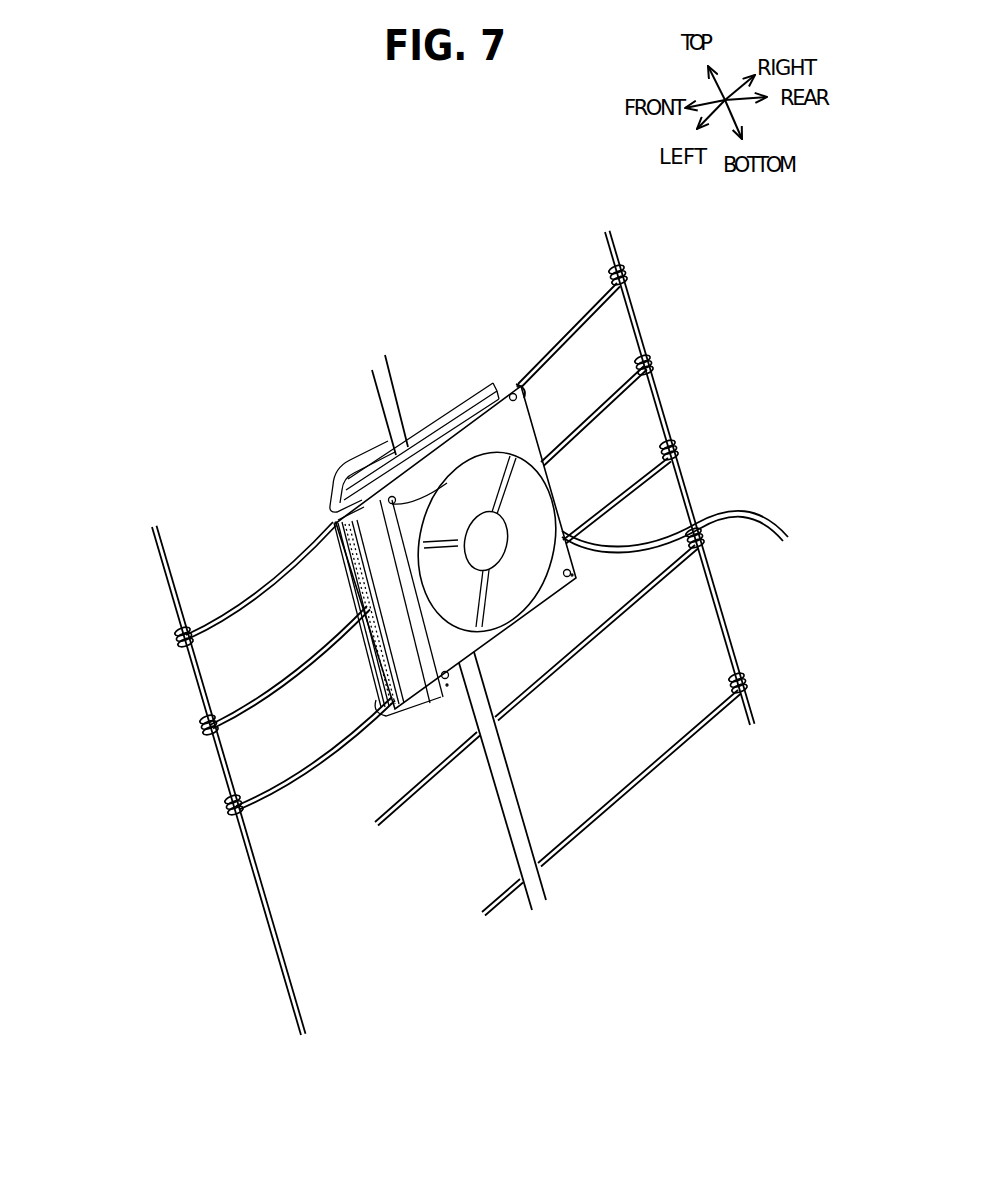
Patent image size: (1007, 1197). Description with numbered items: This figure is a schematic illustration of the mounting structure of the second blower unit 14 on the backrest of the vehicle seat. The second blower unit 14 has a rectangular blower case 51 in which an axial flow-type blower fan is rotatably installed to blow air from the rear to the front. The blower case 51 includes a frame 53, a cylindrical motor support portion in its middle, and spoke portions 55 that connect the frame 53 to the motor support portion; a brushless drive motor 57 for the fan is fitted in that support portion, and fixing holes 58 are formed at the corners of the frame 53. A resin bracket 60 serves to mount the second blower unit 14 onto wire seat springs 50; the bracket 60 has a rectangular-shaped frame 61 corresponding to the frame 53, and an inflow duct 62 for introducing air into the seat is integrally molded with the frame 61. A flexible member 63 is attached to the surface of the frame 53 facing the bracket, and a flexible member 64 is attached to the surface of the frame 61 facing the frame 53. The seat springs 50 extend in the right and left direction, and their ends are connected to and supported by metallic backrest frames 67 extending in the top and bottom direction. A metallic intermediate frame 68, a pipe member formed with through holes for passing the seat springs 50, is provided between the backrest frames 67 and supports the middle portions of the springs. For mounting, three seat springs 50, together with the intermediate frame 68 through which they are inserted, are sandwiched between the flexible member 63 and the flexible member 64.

The second blower unit 14 is at (487, 590).
The wire seat springs 50 is at (584, 310).
The blower case 51 is at (512, 428).
The frame 53 is at (598, 643).
The spoke portions 55 is at (501, 641).
The drive motor 57 is at (492, 548).
The fixing holes 58 is at (520, 386).
The bracket 60 is at (461, 383).
The frame 61 is at (418, 428).
The inflow duct 62 is at (351, 463).
The flexible member 63 is at (363, 675).
The flexible member 64 is at (360, 598).
The backrest frames 67 is at (169, 600).
The intermediate frame 68 is at (518, 800).